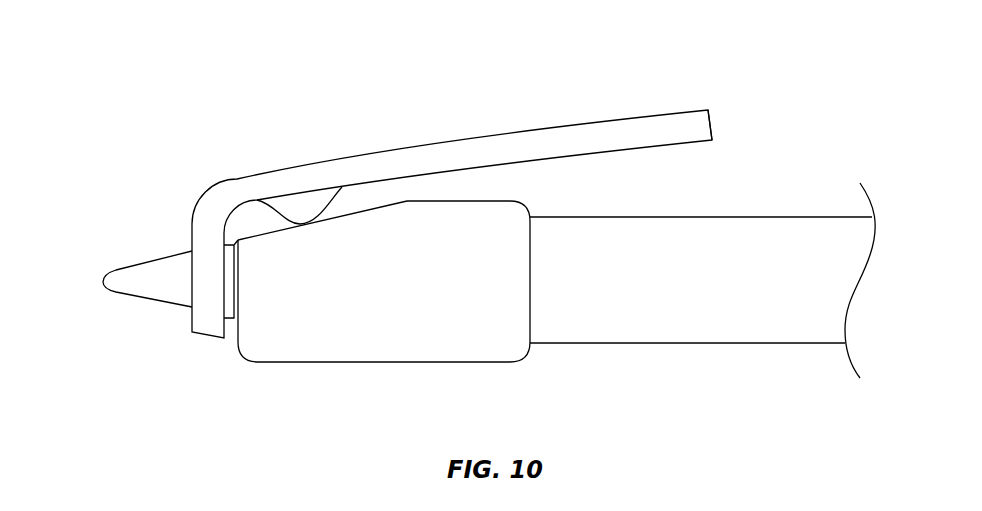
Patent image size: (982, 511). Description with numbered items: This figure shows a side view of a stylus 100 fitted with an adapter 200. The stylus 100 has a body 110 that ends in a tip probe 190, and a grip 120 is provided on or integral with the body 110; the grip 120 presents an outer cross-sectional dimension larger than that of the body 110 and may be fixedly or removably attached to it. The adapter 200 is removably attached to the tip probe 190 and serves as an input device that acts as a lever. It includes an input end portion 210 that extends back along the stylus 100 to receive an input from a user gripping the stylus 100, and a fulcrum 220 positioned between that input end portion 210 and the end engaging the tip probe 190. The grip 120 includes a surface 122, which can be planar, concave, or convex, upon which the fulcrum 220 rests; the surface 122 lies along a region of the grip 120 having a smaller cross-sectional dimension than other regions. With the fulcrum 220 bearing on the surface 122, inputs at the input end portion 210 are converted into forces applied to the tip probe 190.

The stylus 100 is at (160, 99).
The body 110 is at (682, 344).
The grip 120 is at (383, 363).
The surface 122 is at (362, 213).
The tip probe 190 is at (106, 296).
The adapter 200 is at (207, 193).
The input end portion 210 is at (627, 120).
The fulcrum 220 is at (303, 208).